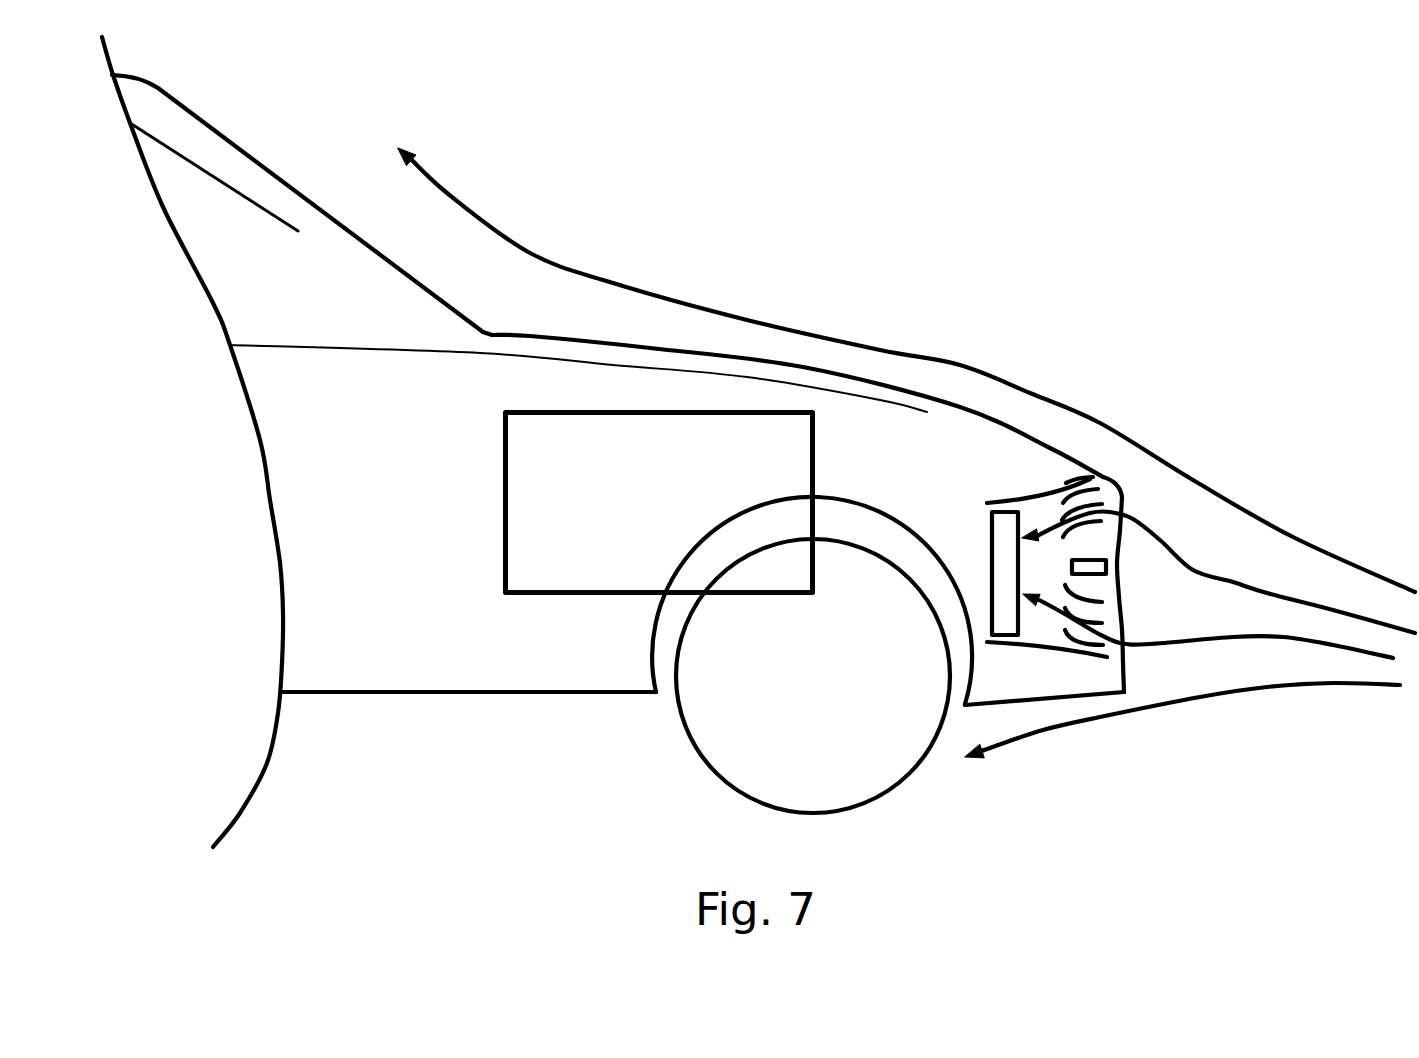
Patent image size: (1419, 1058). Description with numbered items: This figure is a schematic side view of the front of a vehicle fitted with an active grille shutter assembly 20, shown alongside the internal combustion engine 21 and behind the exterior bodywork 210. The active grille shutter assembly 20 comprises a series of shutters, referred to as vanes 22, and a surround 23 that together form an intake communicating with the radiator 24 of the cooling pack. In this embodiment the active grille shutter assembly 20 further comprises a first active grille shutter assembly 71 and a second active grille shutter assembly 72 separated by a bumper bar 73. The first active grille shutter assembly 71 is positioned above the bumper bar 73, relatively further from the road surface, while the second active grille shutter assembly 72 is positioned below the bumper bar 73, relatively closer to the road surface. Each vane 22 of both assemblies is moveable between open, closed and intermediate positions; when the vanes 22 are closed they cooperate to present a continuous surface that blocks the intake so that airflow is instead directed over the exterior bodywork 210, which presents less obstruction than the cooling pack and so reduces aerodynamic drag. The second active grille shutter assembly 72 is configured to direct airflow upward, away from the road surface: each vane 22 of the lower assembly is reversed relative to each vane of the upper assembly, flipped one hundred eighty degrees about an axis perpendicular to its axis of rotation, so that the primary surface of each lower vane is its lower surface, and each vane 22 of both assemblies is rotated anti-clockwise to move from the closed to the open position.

The exterior bodywork 210 is at (803, 366).
The active grille shutter assembly 20 is at (1070, 473).
The internal combustion engine 21 is at (643, 506).
The radiator 24 is at (1002, 545).
The first active grille shutter assembly 71 is at (1108, 496).
The vane 22 is at (1090, 524).
The bumper bar 73 is at (1078, 567).
The second active grille shutter assembly 72 is at (1108, 621).
The surround 23 is at (1051, 648).